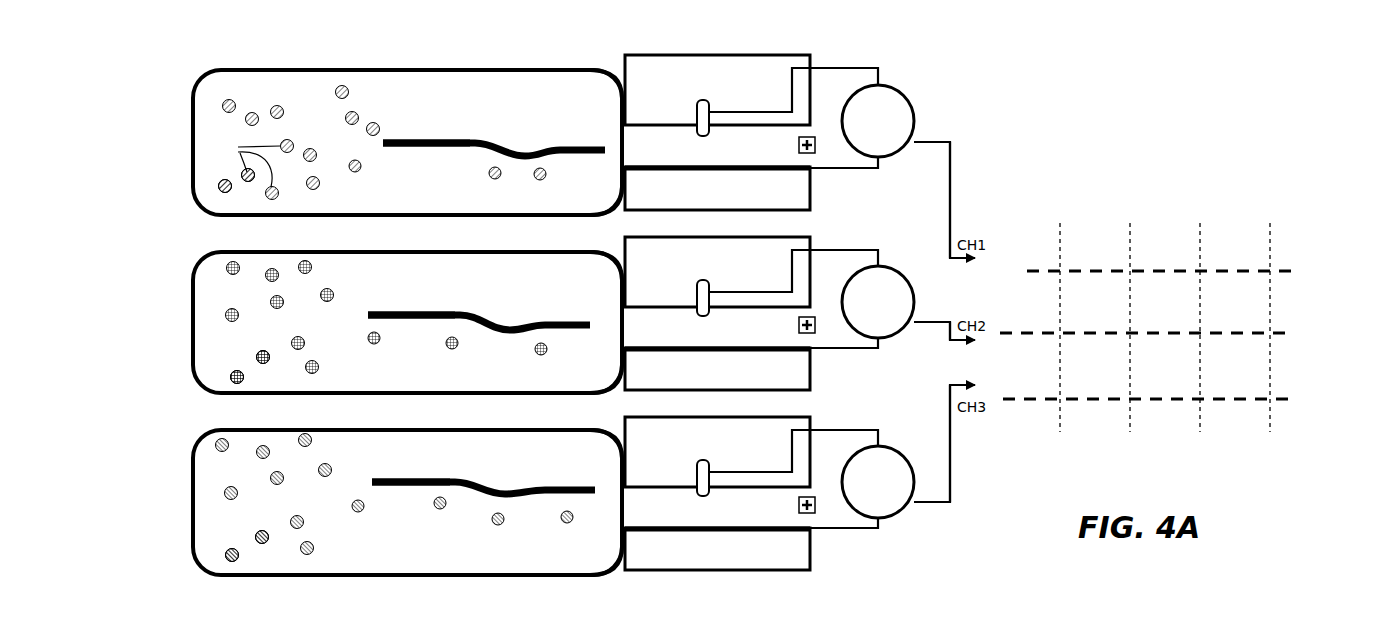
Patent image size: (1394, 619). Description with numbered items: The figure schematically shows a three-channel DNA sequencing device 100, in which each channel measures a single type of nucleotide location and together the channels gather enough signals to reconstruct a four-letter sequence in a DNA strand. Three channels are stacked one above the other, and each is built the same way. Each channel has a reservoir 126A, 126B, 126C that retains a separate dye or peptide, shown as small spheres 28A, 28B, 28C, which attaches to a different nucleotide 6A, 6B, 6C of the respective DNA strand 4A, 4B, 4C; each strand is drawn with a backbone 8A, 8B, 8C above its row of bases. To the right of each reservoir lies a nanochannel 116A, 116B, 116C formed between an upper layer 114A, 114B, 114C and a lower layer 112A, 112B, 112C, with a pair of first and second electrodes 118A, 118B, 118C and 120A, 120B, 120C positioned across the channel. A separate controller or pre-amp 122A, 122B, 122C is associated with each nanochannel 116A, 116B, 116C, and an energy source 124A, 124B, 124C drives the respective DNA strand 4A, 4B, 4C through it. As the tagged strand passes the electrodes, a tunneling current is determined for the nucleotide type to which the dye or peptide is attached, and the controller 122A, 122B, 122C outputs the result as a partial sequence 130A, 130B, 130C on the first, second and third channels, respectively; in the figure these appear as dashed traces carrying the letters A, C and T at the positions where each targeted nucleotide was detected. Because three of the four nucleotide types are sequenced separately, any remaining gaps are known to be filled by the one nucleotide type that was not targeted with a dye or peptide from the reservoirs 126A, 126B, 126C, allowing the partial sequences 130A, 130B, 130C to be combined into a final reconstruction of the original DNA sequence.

The DNA sequencing device 100 is at (941, 100).
The DNA strand 4A is at (508, 137).
The DNA strand 4B is at (490, 318).
The DNA strand 4C is at (500, 482).
The nucleotide 6A is at (430, 178).
The nucleotide 6B is at (414, 355).
The nucleotide 6C is at (414, 520).
The strand backbone 8A is at (440, 142).
The strand backbone 8B is at (415, 314).
The strand backbone 8C is at (415, 481).
The labeled nucleotides 28A is at (219, 187).
The labeled nucleotides 28B is at (231, 377).
The labeled nucleotides 28C is at (226, 556).
The first electrode 112A is at (717, 188).
The first electrode 112B is at (717, 369).
The first electrode 112C is at (717, 549).
The upper layer 114A is at (751, 90).
The upper layer 114B is at (751, 272).
The upper layer 114C is at (751, 452).
The nanochannel 116A is at (636, 148).
The nanochannel 116B is at (637, 330).
The nanochannel 116C is at (637, 510).
The first electrode 118A is at (697, 113).
The first electrode 118B is at (697, 294).
The first electrode 118C is at (697, 474).
The second electrode 120A is at (790, 165).
The second electrode 120B is at (790, 345).
The second electrode 120C is at (790, 525).
The controller or pre-amp 122A is at (892, 171).
The controller or pre-amp 122B is at (892, 307).
The controller or pre-amp 122C is at (892, 456).
The energy source 124A is at (816, 146).
The energy source 124B is at (816, 326).
The energy source 124C is at (816, 506).
The reservoir 126A is at (193, 152).
The reservoir 126B is at (193, 343).
The reservoir 126C is at (193, 536).
The partial sequence 130A is at (1279, 256).
The partial sequence 130B is at (1279, 319).
The partial sequence 130C is at (1279, 384).